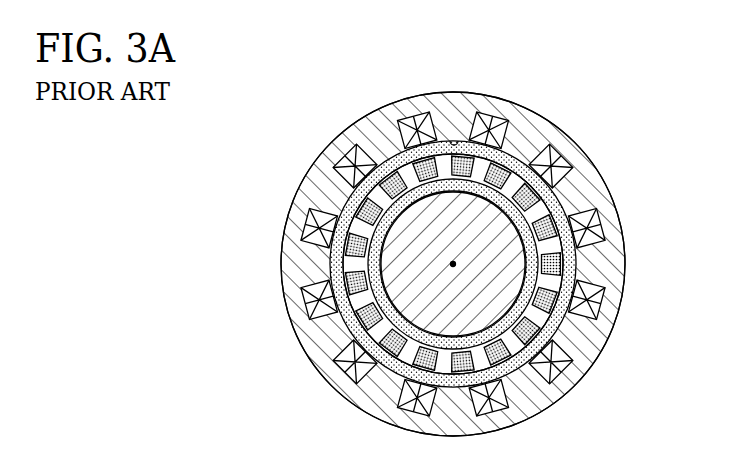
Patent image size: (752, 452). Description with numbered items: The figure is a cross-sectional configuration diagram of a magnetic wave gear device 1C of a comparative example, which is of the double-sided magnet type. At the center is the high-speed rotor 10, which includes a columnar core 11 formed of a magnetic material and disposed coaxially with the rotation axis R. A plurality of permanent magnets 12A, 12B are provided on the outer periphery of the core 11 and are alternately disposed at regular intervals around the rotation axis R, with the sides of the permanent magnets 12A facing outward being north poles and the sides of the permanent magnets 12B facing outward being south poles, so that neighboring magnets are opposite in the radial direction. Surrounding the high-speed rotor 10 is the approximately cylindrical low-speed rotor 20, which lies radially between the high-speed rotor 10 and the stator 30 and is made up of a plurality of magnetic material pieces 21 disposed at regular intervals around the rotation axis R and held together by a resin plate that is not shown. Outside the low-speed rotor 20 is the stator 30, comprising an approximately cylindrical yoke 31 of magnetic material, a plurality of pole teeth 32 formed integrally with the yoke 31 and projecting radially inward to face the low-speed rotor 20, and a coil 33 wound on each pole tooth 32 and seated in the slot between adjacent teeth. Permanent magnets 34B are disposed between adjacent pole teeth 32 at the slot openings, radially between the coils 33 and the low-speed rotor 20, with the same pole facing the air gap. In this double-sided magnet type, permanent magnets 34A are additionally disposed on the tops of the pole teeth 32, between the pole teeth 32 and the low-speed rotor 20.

The magnetic wave gear device 1C is at (308, 156).
The high-speed rotor 10 is at (359, 263).
The core 11 is at (465, 292).
The permanent magnet 12A is at (439, 157).
The permanent magnet 12B is at (540, 172).
The low-speed rotor 20 is at (337, 252).
The magnetic material piece 21 is at (538, 160).
The stator 30 is at (276, 244).
The yoke 31 is at (508, 101).
The pole tooth 32 is at (455, 139).
The coil 33 is at (482, 120).
The permanent magnet 34A is at (381, 158).
The permanent magnet 34B is at (523, 153).
The rotation axis R is at (456, 265).